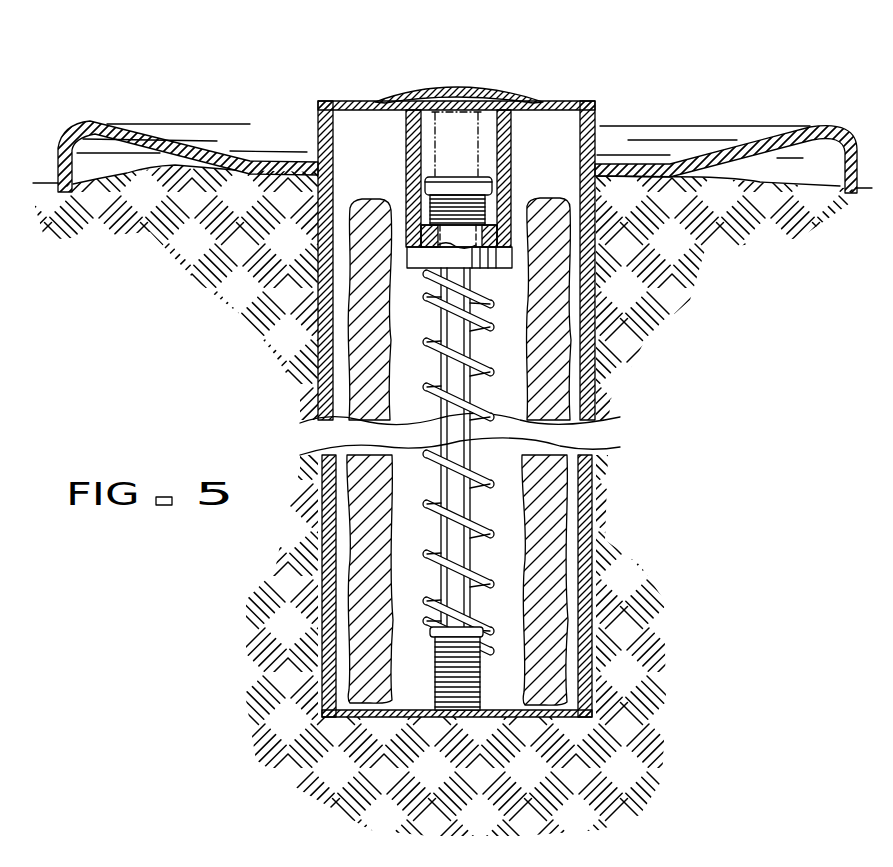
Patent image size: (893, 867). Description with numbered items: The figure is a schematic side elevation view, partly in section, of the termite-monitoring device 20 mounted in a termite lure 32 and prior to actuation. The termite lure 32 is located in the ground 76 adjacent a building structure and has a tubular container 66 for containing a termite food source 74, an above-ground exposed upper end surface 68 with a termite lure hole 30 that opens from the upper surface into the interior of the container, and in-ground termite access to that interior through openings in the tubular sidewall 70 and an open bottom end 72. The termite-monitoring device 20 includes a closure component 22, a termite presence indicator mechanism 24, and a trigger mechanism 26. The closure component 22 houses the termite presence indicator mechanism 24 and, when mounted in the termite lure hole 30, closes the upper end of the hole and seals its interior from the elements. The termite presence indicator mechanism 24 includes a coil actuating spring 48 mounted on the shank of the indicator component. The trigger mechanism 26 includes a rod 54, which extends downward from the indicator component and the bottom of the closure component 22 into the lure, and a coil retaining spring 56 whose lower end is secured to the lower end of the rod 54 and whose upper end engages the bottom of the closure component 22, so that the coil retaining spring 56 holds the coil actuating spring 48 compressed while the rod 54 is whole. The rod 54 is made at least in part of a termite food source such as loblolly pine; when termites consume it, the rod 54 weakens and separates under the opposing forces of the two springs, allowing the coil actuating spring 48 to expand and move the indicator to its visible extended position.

The termite-monitoring device 20 is at (457, 364).
The closure component 22 is at (419, 90).
The termite presence indicator mechanism 24 is at (466, 178).
The trigger mechanism 26 is at (478, 458).
The termite lure hole 30 is at (400, 112).
The termite lure 32 is at (596, 389).
The coil actuating spring 48 is at (422, 207).
The rod 54 is at (495, 488).
The coil retaining spring 56 is at (350, 444).
The tubular container 66 is at (596, 519).
The upper end surface 68 is at (345, 101).
The tubular sidewall 70 is at (322, 511).
The open bottom end 72 is at (448, 720).
The termite food source 74 is at (323, 380).
The ground 76 is at (622, 628).